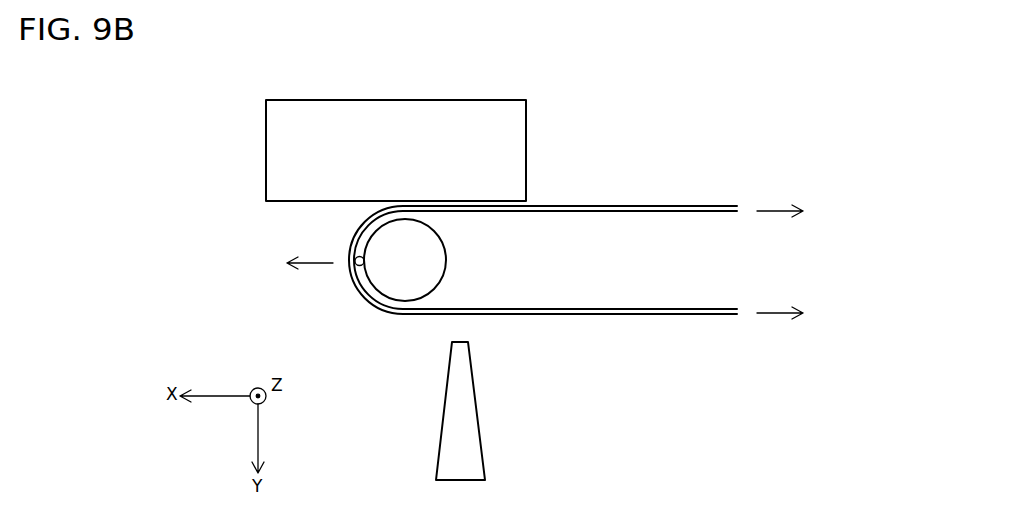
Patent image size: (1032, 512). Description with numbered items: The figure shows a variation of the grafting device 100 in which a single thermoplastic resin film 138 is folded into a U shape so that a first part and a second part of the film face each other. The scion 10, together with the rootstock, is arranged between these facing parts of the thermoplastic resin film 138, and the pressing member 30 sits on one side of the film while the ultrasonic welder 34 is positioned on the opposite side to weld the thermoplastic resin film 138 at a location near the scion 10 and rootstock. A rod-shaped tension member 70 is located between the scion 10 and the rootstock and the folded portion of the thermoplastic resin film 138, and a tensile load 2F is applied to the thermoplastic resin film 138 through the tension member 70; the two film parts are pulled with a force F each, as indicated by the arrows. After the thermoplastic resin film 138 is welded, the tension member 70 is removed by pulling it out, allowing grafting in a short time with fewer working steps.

The grafting device 100 is at (663, 108).
The pressing member 30 is at (526, 138).
The thermoplastic resin film 138 is at (683, 315).
The scion 10 is at (387, 280).
The tension member 70 is at (357, 268).
The ultrasonic welder 34 is at (480, 425).
The tensile load 2F is at (312, 263).
The force F is at (777, 213).